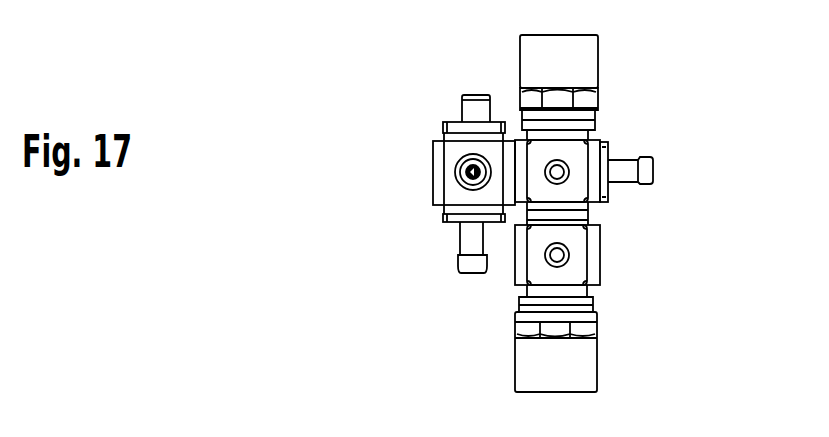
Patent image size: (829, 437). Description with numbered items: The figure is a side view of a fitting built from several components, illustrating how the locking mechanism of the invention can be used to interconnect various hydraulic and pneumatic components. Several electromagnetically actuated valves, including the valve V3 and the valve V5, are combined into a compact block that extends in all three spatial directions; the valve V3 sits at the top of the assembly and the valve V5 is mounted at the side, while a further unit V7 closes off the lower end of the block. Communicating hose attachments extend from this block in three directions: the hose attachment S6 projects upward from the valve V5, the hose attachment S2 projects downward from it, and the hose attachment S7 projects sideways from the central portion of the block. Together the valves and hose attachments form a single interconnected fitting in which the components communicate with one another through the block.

The electromagnetically actuated valve V3 is at (585, 67).
The electromagnetically actuated valve V5 is at (437, 167).
The valve V7 is at (565, 361).
The hose attachment S2 is at (453, 218).
The hose attachment S6 is at (455, 123).
The hose attachment S7 is at (606, 188).